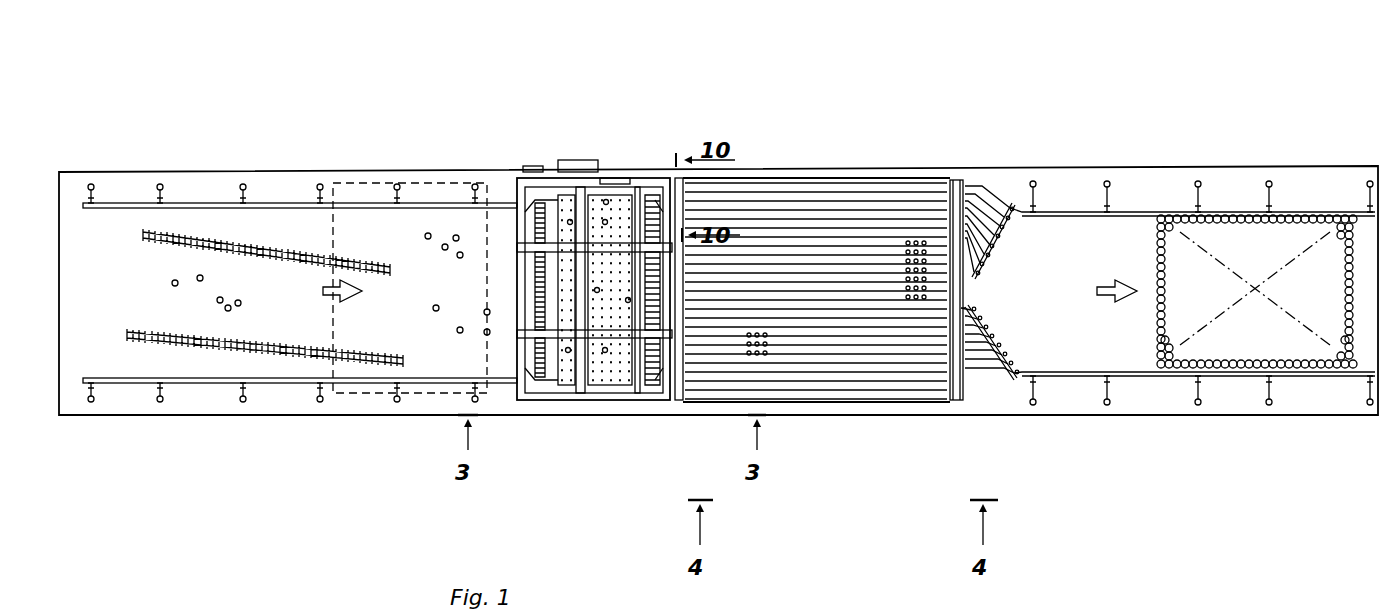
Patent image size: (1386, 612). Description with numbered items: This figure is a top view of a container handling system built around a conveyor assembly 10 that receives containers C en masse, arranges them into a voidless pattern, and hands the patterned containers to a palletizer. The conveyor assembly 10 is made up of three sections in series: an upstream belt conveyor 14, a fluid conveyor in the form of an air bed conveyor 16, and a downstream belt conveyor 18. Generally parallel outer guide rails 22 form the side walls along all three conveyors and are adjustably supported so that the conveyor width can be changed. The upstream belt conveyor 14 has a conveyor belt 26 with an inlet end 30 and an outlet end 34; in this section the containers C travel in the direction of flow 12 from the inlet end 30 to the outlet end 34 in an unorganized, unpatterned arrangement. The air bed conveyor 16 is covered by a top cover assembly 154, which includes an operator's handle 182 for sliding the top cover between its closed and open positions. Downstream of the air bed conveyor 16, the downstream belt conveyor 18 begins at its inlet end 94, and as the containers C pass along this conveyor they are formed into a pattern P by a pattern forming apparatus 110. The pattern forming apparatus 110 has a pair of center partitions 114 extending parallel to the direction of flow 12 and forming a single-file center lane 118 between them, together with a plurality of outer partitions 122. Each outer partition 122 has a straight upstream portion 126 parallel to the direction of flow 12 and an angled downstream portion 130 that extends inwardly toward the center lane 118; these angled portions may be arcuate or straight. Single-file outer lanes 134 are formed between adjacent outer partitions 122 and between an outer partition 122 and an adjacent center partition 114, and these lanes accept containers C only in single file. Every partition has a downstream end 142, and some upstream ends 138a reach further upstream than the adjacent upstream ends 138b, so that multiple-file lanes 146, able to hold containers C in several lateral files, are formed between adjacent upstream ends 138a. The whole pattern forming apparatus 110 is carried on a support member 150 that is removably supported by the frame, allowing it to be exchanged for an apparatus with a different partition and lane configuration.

The conveyor assembly 10 is at (616, 72).
The direction of flow 12 is at (325, 293).
The upstream belt conveyor 14 is at (340, 146).
The air bed conveyor 16 is at (568, 146).
The downstream belt conveyor 18 is at (906, 162).
The outer guide rails 22 is at (186, 200).
The conveyor belt 26 is at (128, 316).
The inlet end 30 is at (112, 226).
The outlet end 34 is at (510, 284).
The inlet end 94 is at (1326, 297).
The pattern forming apparatus 110 is at (912, 398).
The center partitions 114 is at (965, 271).
The center lane 118 is at (952, 293).
The outer partitions 122 is at (985, 262).
The straight upstream portion 126 is at (798, 208).
The angled downstream portion 130 is at (1003, 185).
The single-file outer lanes 134 is at (867, 224).
The upstream ends 138a is at (625, 302).
The upstream ends 138b is at (655, 382).
The downstream end 142 is at (1015, 225).
The multiple-file lanes 146 is at (627, 362).
The support member 150 is at (705, 180).
The top cover assembly 154 is at (430, 212).
The operator's handle 182 is at (615, 176).
The containers C is at (198, 275).
The pattern P is at (1144, 243).